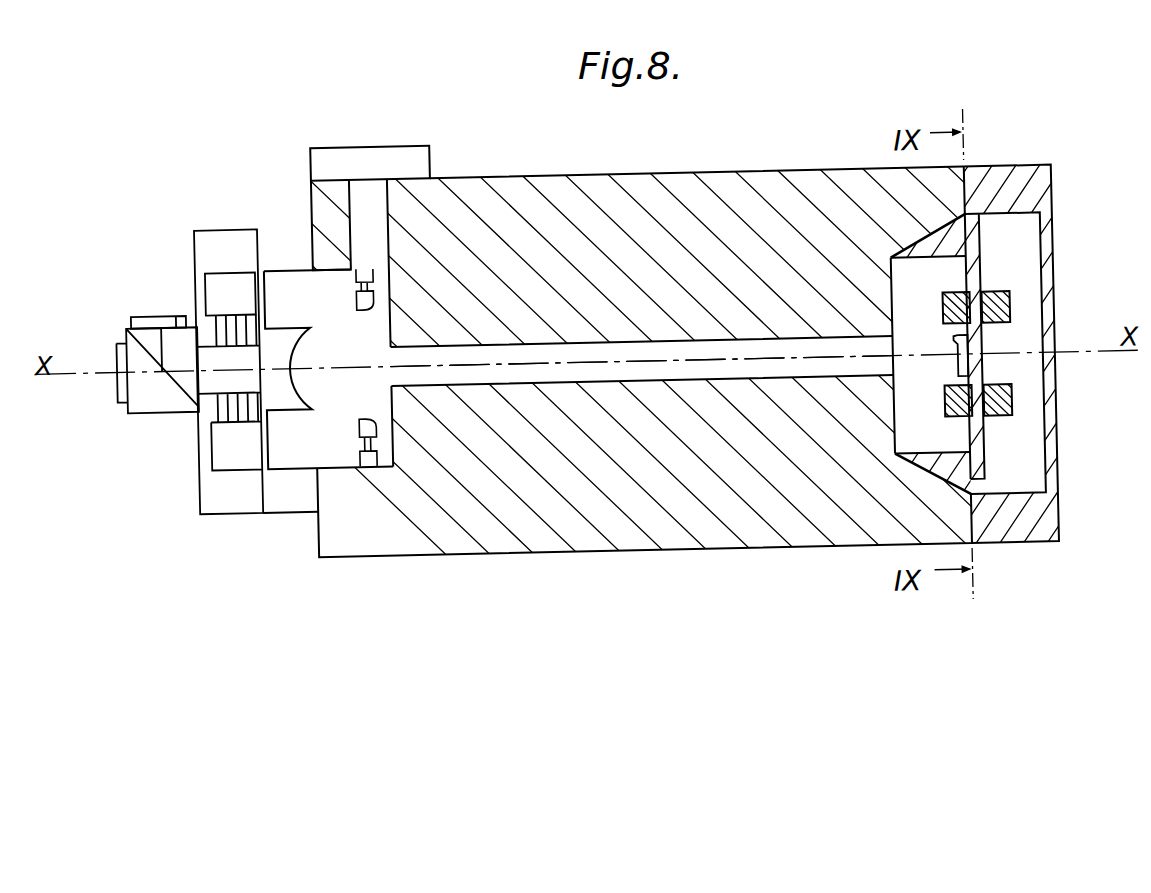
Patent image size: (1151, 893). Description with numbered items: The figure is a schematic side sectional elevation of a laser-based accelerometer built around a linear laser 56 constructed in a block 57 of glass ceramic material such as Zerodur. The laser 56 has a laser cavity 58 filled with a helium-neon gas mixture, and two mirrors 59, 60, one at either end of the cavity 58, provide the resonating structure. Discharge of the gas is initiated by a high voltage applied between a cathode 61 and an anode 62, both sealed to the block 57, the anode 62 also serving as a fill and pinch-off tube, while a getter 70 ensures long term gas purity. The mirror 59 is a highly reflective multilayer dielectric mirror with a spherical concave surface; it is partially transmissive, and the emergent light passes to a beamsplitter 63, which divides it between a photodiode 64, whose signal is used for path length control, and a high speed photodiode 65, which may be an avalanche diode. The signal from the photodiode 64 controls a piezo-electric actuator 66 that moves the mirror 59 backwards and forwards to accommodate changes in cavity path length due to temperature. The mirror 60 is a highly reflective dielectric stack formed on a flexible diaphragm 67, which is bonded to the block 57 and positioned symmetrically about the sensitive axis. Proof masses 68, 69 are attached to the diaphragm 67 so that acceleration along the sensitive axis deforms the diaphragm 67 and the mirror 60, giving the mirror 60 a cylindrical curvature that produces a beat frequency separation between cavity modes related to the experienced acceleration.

The linear laser 56 is at (706, 347).
The block 57 is at (538, 534).
The laser cavity 58 is at (750, 358).
The mirror 59 is at (312, 383).
The mirror 60 is at (979, 343).
The cathode 61 is at (1027, 521).
The anode 62 is at (405, 114).
The beamsplitter 63 is at (123, 312).
The photodiode 64 is at (178, 300).
The high speed photodiode 65 is at (114, 374).
The piezo-electric actuator 66 is at (234, 405).
The flexible diaphragm 67 is at (968, 222).
The proof mass 68 is at (1009, 301).
The proof mass 69 is at (991, 406).
The getter 70 is at (368, 463).